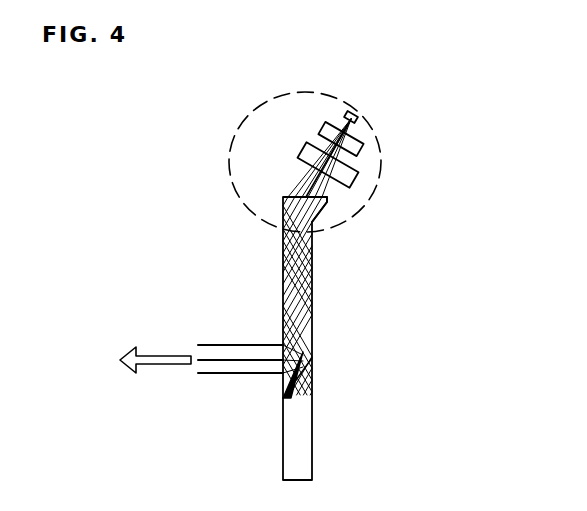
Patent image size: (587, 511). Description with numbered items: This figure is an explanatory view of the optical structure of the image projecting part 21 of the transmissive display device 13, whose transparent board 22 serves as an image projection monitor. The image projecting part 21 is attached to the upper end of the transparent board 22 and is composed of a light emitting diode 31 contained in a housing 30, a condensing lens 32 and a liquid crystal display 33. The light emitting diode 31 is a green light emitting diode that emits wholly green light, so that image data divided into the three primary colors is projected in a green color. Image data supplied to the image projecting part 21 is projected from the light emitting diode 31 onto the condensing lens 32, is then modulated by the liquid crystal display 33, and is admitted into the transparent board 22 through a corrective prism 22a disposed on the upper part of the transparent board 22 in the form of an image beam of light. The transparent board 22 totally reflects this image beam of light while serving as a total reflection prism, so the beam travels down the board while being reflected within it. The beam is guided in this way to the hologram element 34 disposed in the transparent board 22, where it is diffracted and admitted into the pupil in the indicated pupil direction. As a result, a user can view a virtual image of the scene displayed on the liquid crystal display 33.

The transmissive display device 13 is at (186, 208).
The image projecting part 21 is at (356, 179).
The transparent board 22 is at (299, 338).
The corrective prism 22a is at (340, 223).
The housing 30 is at (252, 113).
The light emitting diode 31 is at (359, 119).
The condensing lens 32 is at (360, 150).
The liquid crystal display 33 is at (354, 186).
The hologram element 34 is at (304, 372).